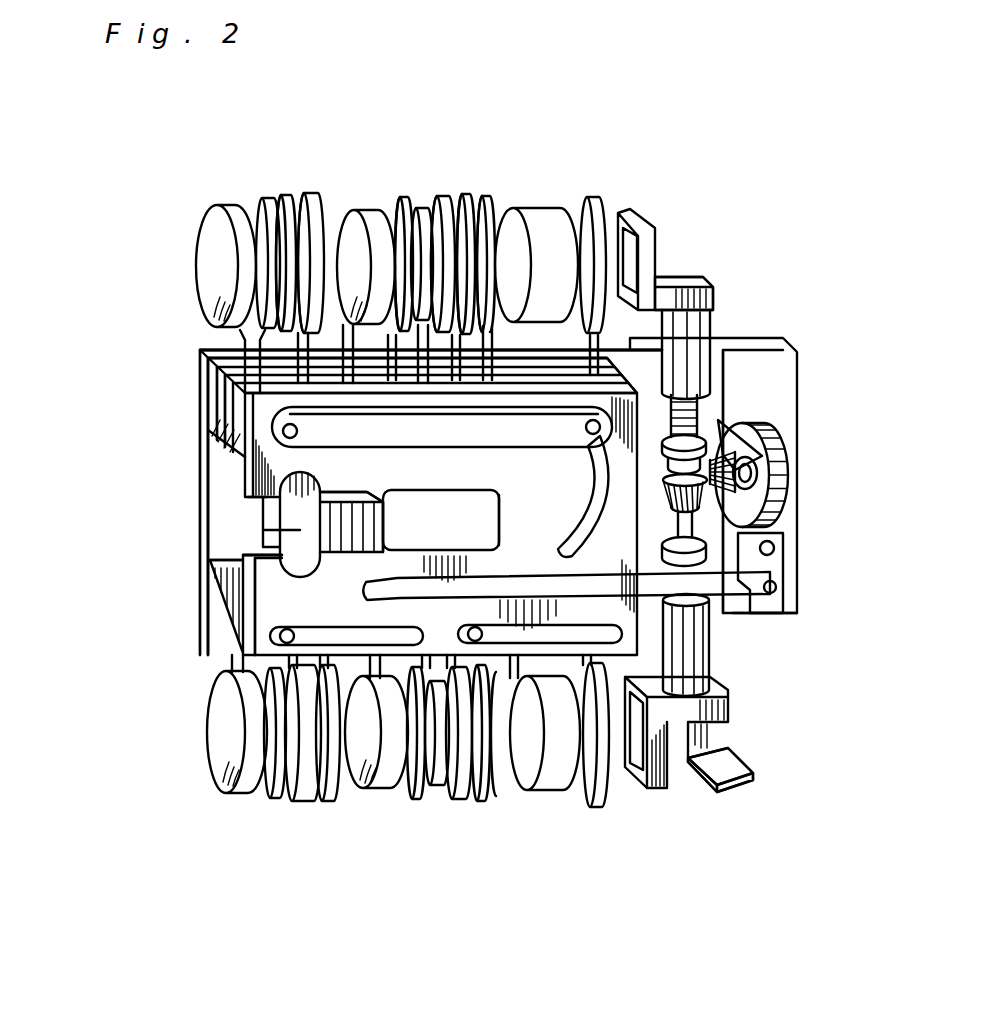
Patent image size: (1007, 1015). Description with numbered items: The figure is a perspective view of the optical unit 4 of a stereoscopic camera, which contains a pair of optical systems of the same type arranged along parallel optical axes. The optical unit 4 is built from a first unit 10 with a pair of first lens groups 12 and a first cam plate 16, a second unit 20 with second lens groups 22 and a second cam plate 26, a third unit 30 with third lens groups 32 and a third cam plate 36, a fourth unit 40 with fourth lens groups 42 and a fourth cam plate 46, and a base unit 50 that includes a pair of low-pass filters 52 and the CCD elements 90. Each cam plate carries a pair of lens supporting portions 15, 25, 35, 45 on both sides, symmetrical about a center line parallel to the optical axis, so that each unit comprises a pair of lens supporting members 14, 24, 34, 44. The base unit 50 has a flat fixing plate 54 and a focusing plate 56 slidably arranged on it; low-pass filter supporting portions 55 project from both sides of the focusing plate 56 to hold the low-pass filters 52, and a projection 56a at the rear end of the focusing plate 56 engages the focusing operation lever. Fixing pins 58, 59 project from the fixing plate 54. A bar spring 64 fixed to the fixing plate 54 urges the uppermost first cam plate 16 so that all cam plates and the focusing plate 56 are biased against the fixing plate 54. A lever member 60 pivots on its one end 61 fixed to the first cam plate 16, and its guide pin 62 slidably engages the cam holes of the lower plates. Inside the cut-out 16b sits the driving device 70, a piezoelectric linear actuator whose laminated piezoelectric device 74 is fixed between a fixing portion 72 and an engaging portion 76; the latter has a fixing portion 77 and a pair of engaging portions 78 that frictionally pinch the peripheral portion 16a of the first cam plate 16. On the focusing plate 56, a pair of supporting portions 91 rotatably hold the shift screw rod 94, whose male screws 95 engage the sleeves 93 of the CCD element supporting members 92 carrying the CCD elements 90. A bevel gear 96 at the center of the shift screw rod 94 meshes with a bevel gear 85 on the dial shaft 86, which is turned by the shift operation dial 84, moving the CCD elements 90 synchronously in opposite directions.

The optical unit 4 is at (766, 121).
The first unit 10 is at (246, 478).
The first lens group 12 is at (210, 210).
The first lens supporting member 14 is at (140, 283).
The first lens supporting portion 15 is at (240, 337).
The first cam plate 16 is at (245, 390).
The peripheral portion 16a is at (427, 563).
The cut-out 16b is at (487, 510).
The second unit 20 is at (237, 442).
The second lens group 22 is at (266, 198).
The second lens supporting member 24 is at (275, 108).
The second lens supporting portion 25 is at (285, 196).
The second cam plate 26 is at (343, 340).
The third unit 30 is at (238, 430).
The third lens group 32 is at (358, 210).
The third lens supporting member 34 is at (400, 108).
The third lens supporting portion 35 is at (404, 198).
The third cam plate 36 is at (430, 340).
The fourth unit 40 is at (215, 403).
The fourth lens group 42 is at (424, 206).
The fourth lens supporting member 44 is at (515, 108).
The fourth lens supporting portion 45 is at (483, 340).
The fourth cam plate 46 is at (505, 215).
The base unit 50 is at (200, 517).
The low-pass filter 52 is at (537, 213).
The fixing plate 54 is at (753, 340).
The low-pass filter supporting portion 55 is at (582, 192).
The focusing plate 56 is at (720, 372).
The projection 56a is at (737, 793).
The fixing pin 58 is at (290, 630).
The fixing pin 59 is at (478, 628).
The lever member 60 is at (465, 445).
The one end of lever member 61 is at (296, 436).
The guide pin 62 is at (588, 434).
The bar spring 64 is at (528, 577).
The driving device 70 is at (85, 545).
The fixing portion 72 is at (397, 523).
The piezoelectric device 74 is at (340, 545).
The engaging portion 76 is at (138, 542).
The fixing portion 77 is at (263, 517).
The engaging portion 78 is at (300, 530).
The shift operation dial 84 is at (790, 463).
The bevel gear 85 is at (730, 503).
The dial shaft 86 is at (750, 462).
The CCD element 90 is at (633, 240).
The supporting portion 91 is at (593, 505).
The CCD element supporting member 92 is at (655, 250).
The sleeve 93 is at (710, 337).
The shift screw rod 94 is at (700, 445).
The male screw 95 is at (703, 393).
The bevel gear 96 is at (797, 560).